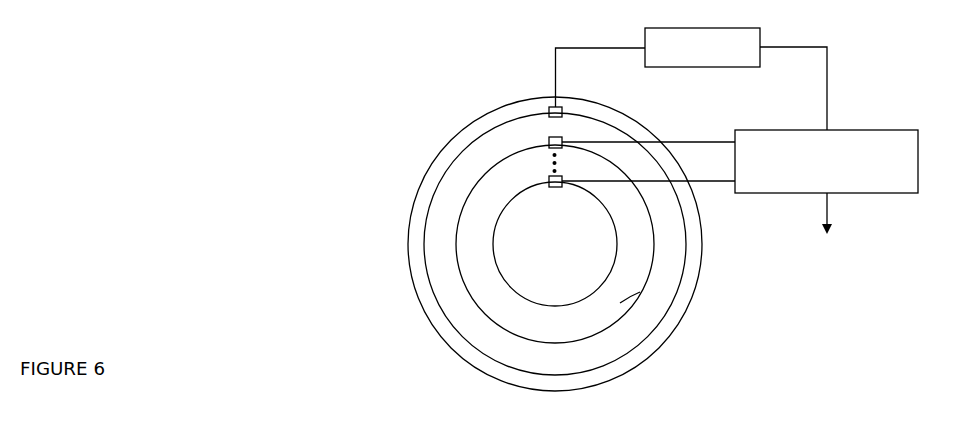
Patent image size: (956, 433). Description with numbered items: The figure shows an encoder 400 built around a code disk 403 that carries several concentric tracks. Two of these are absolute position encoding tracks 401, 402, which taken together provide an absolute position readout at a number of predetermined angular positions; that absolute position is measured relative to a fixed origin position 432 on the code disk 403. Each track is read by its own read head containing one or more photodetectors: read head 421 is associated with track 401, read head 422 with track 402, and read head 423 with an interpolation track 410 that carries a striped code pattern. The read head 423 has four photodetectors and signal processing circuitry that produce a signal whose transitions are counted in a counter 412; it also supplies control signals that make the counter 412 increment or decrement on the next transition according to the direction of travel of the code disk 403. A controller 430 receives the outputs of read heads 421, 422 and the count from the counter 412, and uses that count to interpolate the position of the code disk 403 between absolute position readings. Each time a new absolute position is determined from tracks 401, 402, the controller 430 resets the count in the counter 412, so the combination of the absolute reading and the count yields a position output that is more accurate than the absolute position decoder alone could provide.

The encoder 400 is at (354, 67).
The absolute position encoding track 401 is at (608, 212).
The absolute position encoding track 402 is at (640, 195).
The code disk 403 is at (446, 148).
The interpolation track 410 is at (575, 114).
The counter 412 is at (702, 70).
The read head 421 is at (551, 188).
The read head 422 is at (548, 146).
The read head 423 is at (549, 106).
The controller 430 is at (773, 194).
The fixed origin position 432 is at (634, 307).